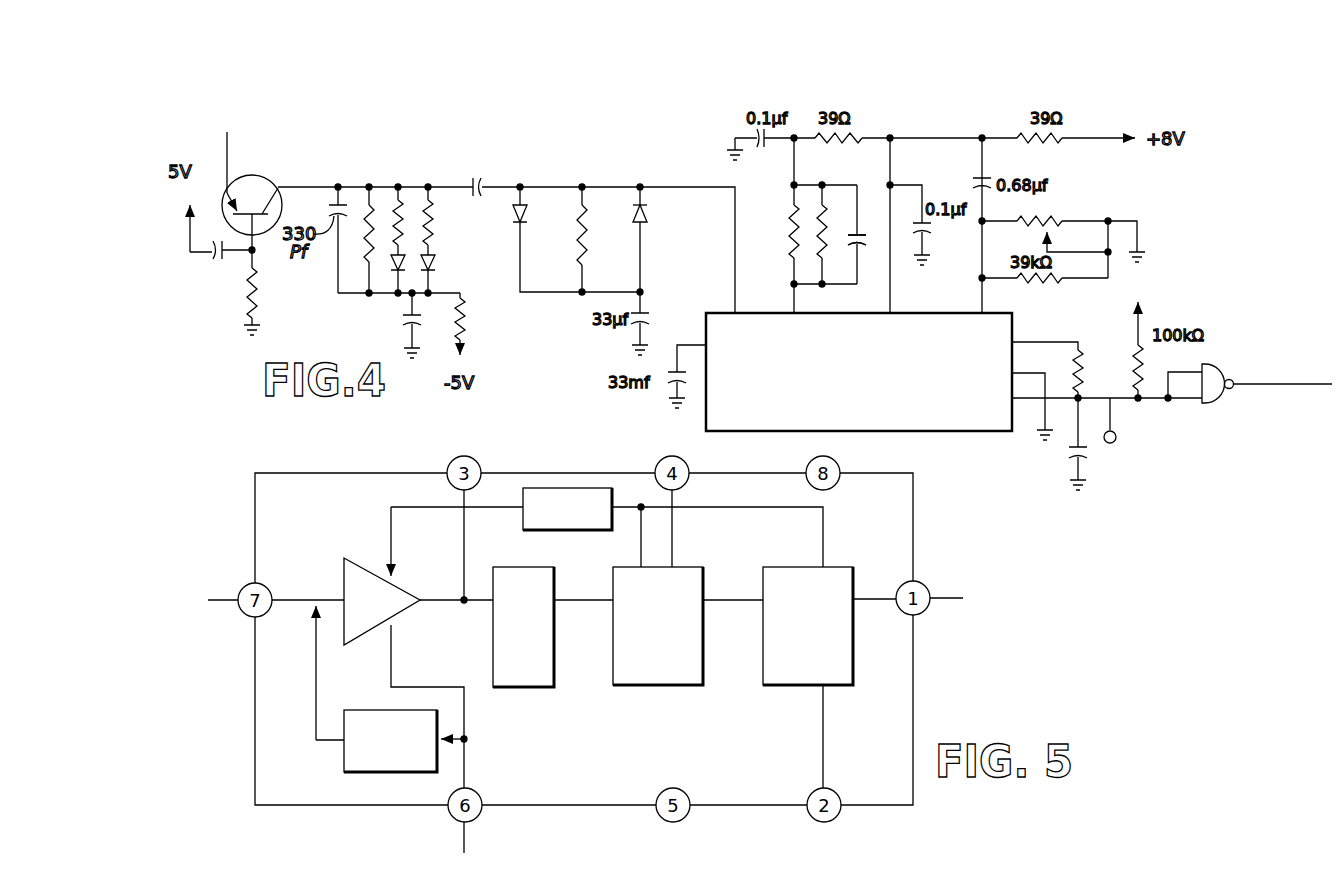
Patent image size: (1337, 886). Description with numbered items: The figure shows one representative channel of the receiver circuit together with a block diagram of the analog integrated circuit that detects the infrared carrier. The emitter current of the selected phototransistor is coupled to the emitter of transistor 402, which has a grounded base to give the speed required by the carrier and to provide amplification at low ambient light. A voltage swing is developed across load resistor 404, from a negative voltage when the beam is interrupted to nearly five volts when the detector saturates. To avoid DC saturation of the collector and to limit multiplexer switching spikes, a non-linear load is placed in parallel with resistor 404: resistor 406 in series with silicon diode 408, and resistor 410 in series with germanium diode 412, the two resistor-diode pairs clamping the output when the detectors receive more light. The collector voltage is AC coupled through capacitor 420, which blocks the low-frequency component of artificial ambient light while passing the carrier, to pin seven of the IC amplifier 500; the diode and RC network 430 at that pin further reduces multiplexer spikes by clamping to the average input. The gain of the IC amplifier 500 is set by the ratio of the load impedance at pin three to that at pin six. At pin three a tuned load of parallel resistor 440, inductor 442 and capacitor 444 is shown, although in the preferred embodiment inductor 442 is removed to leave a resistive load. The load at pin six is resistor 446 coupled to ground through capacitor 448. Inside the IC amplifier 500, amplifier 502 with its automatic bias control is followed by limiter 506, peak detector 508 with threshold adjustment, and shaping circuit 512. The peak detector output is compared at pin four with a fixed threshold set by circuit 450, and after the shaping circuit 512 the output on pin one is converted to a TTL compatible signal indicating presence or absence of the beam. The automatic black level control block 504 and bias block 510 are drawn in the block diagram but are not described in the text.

In FIG. 4, the transistor 402 is at (255, 175).
In FIG. 4, the load resistor 404 is at (362, 243).
In FIG. 4, the resistor 406 is at (393, 210).
In FIG. 4, the silicon diode 408 is at (392, 268).
In FIG. 4, the resistor 410 is at (430, 205).
In FIG. 4, the germanium diode 412 is at (434, 263).
In FIG. 4, the capacitor 420 is at (489, 173).
In FIG. 4, the diode and RC network 430 is at (553, 176).
In FIG. 4, the resistor 440 is at (792, 212).
In FIG. 4, the inductor 442 is at (826, 232).
In FIG. 4, the capacitor 444 is at (863, 250).
In FIG. 4, the resistor 446 is at (1082, 362).
In FIG. 4, the capacitor 448 is at (1088, 455).
In FIG. 4, the threshold circuit 450 is at (1120, 216).
In FIG. 4, the IC amplifier 500 is at (922, 436).
In FIG. 5, the IC amplifier 500 is at (587, 663).
In FIG. 5, the amplifier 502 is at (369, 571).
In FIG. 5, the automatic black level control (ABLC) 504 is at (352, 773).
In FIG. 5, the limiter 506 is at (518, 689).
In FIG. 5, the peak detector 508 is at (660, 688).
In FIG. 5, the bias circuit 510 is at (562, 533).
In FIG. 5, the shaping circuit 512 is at (803, 565).